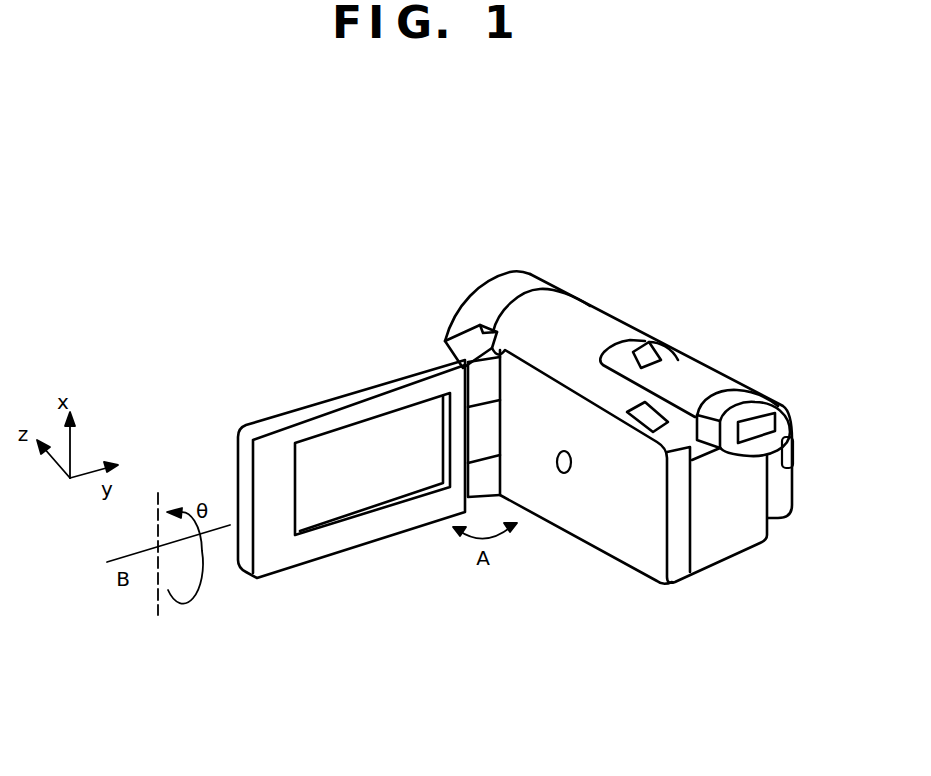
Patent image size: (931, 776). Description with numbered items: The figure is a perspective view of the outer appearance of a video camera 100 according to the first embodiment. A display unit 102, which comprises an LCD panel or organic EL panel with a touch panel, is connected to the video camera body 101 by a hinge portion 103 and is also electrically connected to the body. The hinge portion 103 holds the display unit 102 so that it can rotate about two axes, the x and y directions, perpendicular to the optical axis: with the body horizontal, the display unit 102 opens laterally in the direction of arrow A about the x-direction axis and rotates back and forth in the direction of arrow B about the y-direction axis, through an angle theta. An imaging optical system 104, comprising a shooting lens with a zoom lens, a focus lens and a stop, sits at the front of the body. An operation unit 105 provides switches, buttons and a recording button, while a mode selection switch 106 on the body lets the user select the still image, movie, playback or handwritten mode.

The video camera 100 is at (602, 265).
The video camera body 101 is at (642, 563).
The display unit 102 is at (343, 403).
The hinge portion 103 is at (488, 410).
The imaging optical system 104 is at (492, 283).
The operation unit 105 is at (797, 438).
The mode selection switch 106 is at (567, 473).